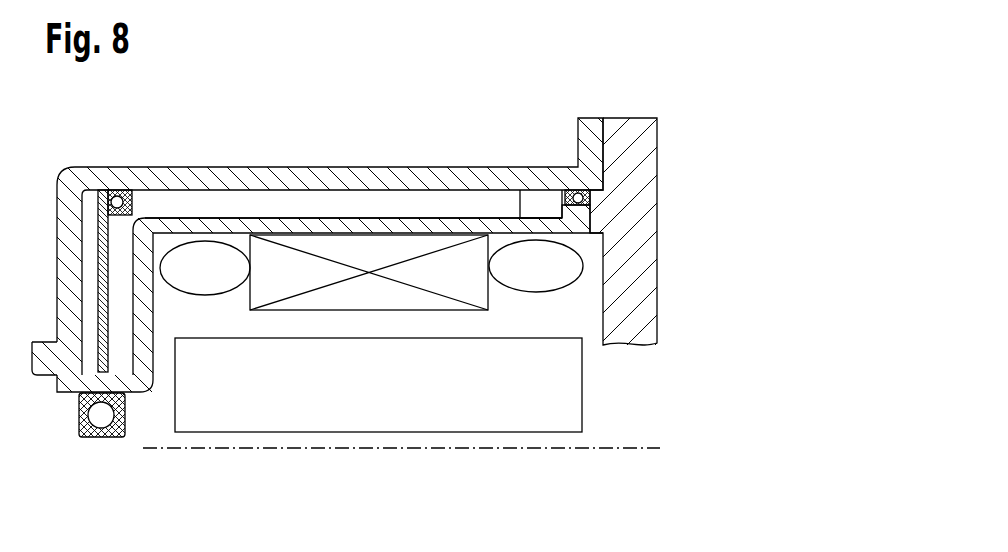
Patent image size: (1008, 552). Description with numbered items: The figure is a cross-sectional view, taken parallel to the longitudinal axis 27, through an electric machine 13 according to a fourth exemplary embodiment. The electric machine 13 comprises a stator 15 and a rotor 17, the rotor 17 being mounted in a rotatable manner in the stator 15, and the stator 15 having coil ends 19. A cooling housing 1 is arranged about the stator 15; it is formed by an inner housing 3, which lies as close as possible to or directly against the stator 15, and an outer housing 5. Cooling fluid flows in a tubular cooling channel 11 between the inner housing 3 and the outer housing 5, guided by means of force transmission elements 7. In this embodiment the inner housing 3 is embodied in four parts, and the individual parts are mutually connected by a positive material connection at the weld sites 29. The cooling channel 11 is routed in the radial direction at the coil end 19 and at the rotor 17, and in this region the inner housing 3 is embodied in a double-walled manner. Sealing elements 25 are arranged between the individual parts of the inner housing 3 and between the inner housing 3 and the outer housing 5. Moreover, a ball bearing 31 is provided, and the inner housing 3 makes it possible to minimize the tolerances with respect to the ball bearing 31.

The cooling housing 1 is at (402, 146).
The inner housing 3 is at (361, 215).
The outer housing 5 is at (213, 167).
The force transmission elements 7 is at (438, 206).
The cooling channel 11 is at (125, 253).
The electric machine 13 is at (78, 167).
The stator 15 is at (490, 293).
The rotor 17 is at (510, 381).
The coil ends 19 is at (188, 270).
The sealing elements 25 is at (116, 196).
The longitudinal axis 27 is at (189, 451).
The weld sites 29 is at (248, 219).
The ball bearing 31 is at (100, 438).